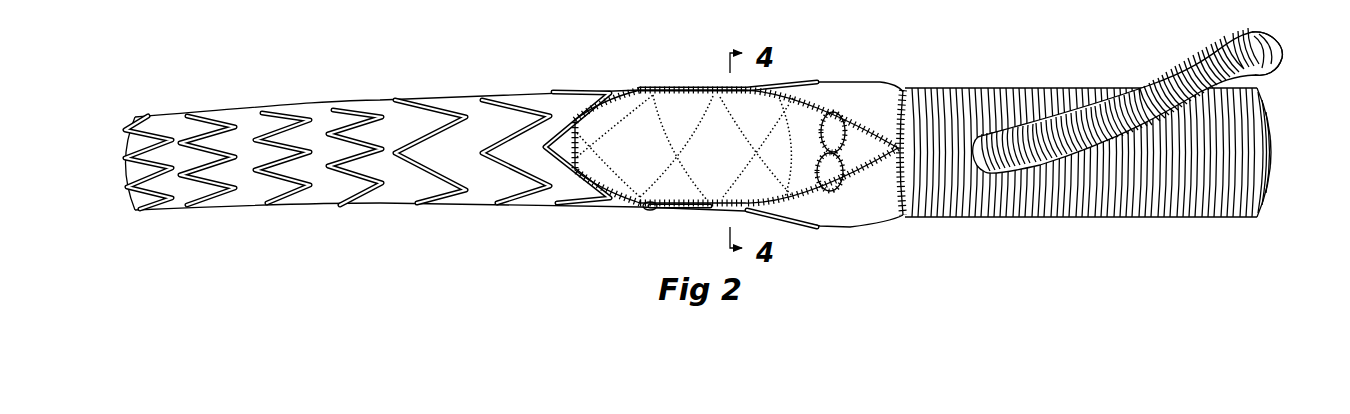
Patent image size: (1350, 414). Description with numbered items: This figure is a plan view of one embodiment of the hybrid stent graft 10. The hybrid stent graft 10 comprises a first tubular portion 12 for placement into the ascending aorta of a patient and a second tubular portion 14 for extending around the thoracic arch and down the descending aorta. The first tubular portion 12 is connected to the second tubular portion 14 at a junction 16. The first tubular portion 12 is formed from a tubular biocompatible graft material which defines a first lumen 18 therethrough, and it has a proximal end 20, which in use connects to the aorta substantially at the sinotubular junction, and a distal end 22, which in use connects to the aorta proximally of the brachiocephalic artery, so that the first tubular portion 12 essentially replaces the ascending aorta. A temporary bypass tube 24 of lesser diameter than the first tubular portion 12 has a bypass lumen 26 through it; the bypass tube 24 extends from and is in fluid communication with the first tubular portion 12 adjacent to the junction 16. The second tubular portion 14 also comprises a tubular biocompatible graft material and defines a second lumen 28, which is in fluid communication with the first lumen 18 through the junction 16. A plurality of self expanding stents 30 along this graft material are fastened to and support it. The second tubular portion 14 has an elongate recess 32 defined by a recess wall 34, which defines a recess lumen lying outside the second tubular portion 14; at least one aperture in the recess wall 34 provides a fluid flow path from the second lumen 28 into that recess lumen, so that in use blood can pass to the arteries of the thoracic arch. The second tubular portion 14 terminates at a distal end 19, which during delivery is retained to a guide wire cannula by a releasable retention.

The hybrid stent graft 10 is at (290, 80).
The first tubular portion 12 is at (1107, 180).
The second tubular portion 14 is at (402, 180).
The junction 16 is at (900, 216).
The first lumen 18 is at (1288, 158).
The distal end of the second tubular portion 19 is at (158, 201).
The proximal end 20 is at (1277, 120).
The distal end 22 is at (928, 180).
The temporary bypass tube 24 is at (1143, 80).
The bypass lumen 26 is at (1283, 62).
The second lumen 28 is at (108, 165).
The self expanding stents 30 is at (440, 100).
The elongate recess 32 is at (660, 78).
The recess wall 34 is at (626, 178).